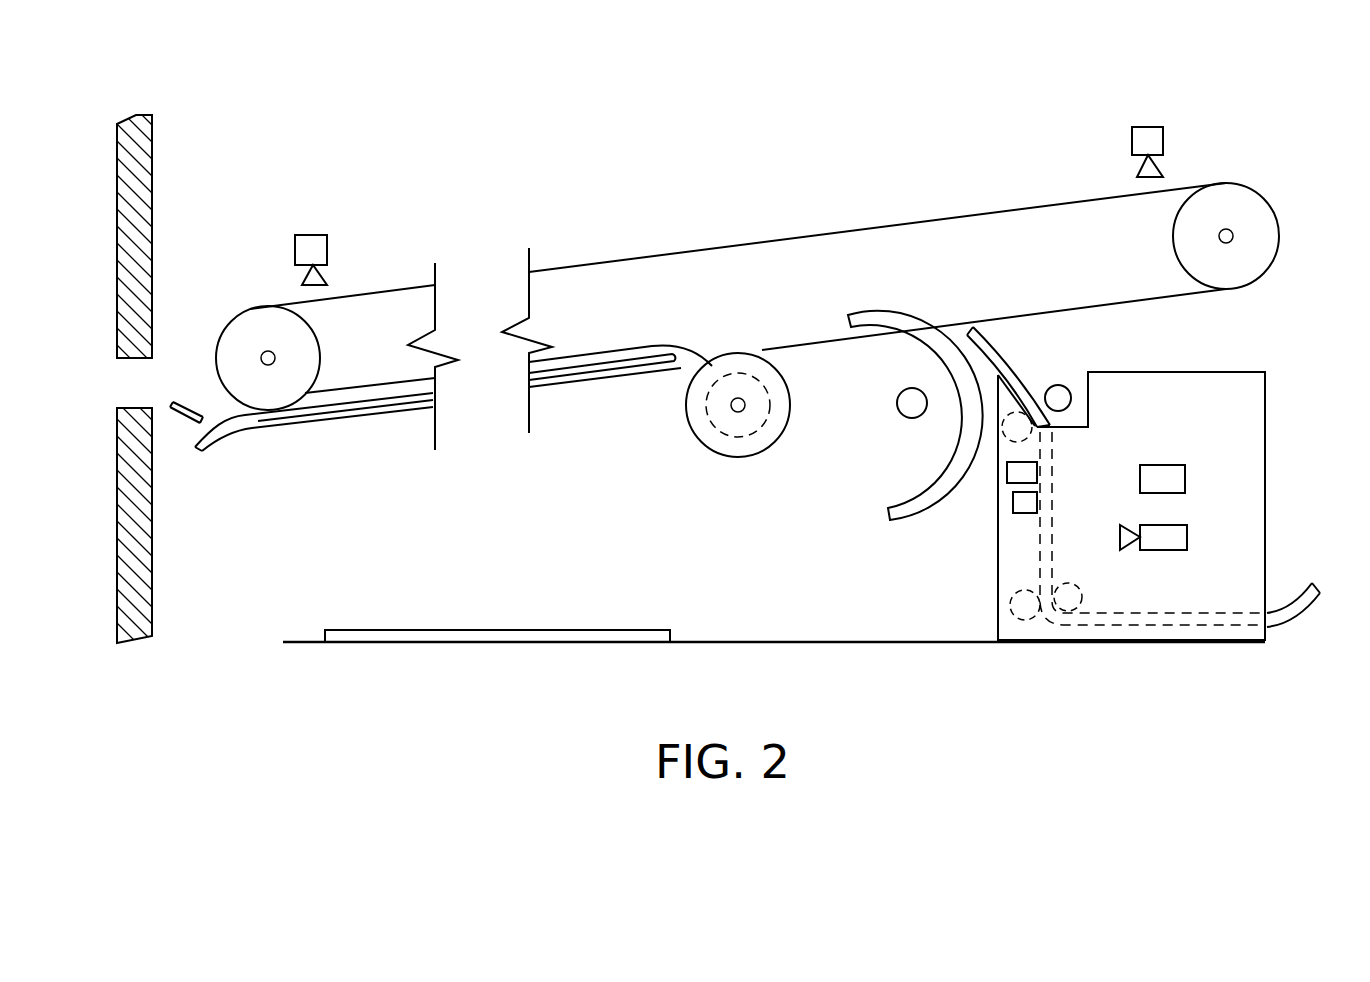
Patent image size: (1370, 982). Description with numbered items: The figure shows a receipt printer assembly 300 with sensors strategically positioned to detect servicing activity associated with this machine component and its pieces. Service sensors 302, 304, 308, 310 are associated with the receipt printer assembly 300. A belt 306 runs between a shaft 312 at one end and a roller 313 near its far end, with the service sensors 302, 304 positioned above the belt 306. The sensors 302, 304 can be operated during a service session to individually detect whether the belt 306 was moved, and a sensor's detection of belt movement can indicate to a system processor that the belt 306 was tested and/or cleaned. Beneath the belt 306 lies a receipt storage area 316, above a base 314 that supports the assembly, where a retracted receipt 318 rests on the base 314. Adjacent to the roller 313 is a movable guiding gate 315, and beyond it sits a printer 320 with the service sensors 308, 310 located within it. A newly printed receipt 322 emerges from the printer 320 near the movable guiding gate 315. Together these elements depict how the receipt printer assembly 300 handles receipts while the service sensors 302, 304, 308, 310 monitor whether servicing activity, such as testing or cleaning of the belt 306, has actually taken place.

The receipt printer assembly 300 is at (640, 163).
The service sensor 302 is at (1150, 124).
The service sensor 304 is at (316, 233).
The belt 306 is at (906, 220).
The service sensor 308 is at (1170, 465).
The service sensor 310 is at (1170, 525).
The shaft 312 is at (266, 350).
The roller 313 is at (697, 440).
The base 314 is at (855, 650).
The movable guiding gate 315 is at (945, 478).
The receipt storage area 316 is at (490, 556).
The retracted receipt 318 is at (638, 630).
The printer 320 is at (1196, 417).
The newly printed receipt 322 is at (1025, 376).